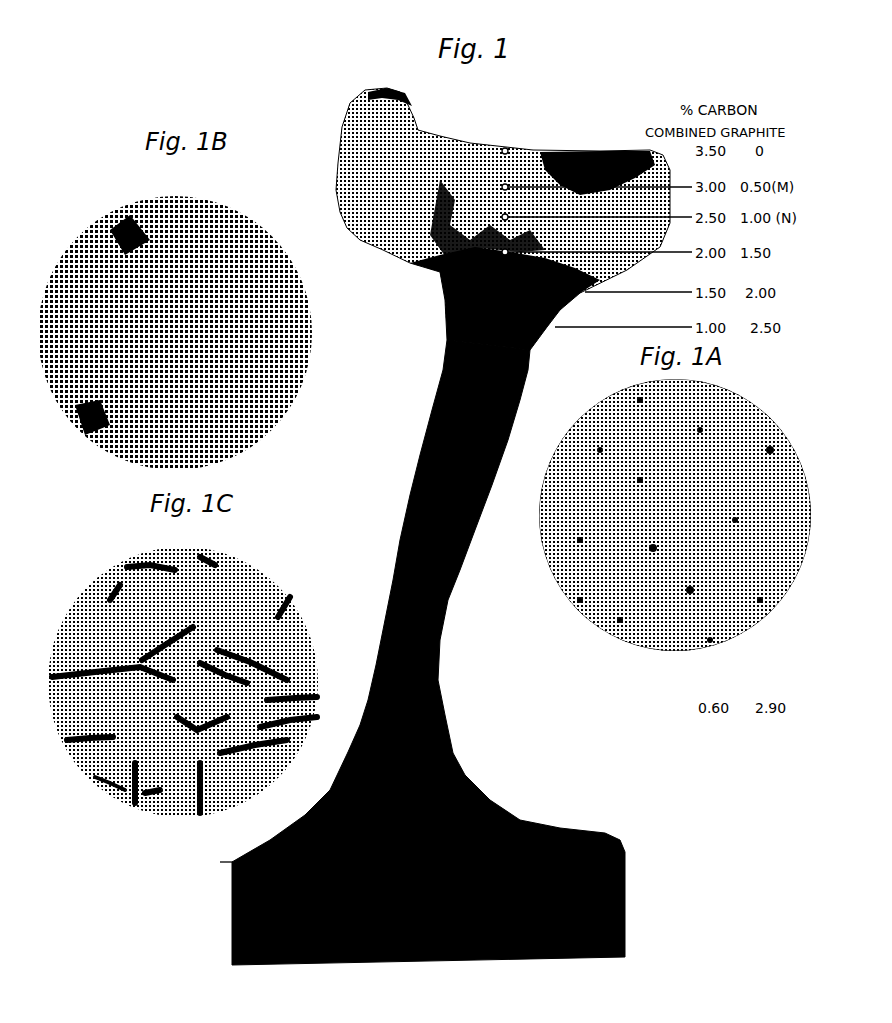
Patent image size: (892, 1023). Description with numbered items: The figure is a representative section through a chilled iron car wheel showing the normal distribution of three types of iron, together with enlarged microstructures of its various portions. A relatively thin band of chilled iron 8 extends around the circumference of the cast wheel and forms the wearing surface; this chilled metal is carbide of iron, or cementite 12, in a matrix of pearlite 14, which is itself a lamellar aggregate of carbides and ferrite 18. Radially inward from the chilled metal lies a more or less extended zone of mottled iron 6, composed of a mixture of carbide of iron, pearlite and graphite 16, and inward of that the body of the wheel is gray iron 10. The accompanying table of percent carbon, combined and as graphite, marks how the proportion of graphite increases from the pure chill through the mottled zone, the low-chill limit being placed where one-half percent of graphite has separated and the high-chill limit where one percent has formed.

In FIG. 1, the mottled iron 6 is at (360, 175).
In FIG. 1, the chilled iron 8 is at (678, 150).
In FIG. 1A, the chilled iron 8 is at (540, 517).
In FIG. 1, the gray iron 10 is at (477, 787).
In FIG. 1B, the cementite 12 is at (63, 258).
In FIG. 1A, the cementite 12 is at (613, 447).
In FIG. 1B, the pearlite 14 is at (96, 222).
In FIG. 1A, the pearlite 14 is at (667, 537).
In FIG. 1C, the pearlite 14 is at (110, 580).
In FIG. 1B, the graphite 16 is at (72, 420).
In FIG. 1C, the graphite 16 is at (95, 783).
In FIG. 1C, the ferrite 18 is at (137, 733).